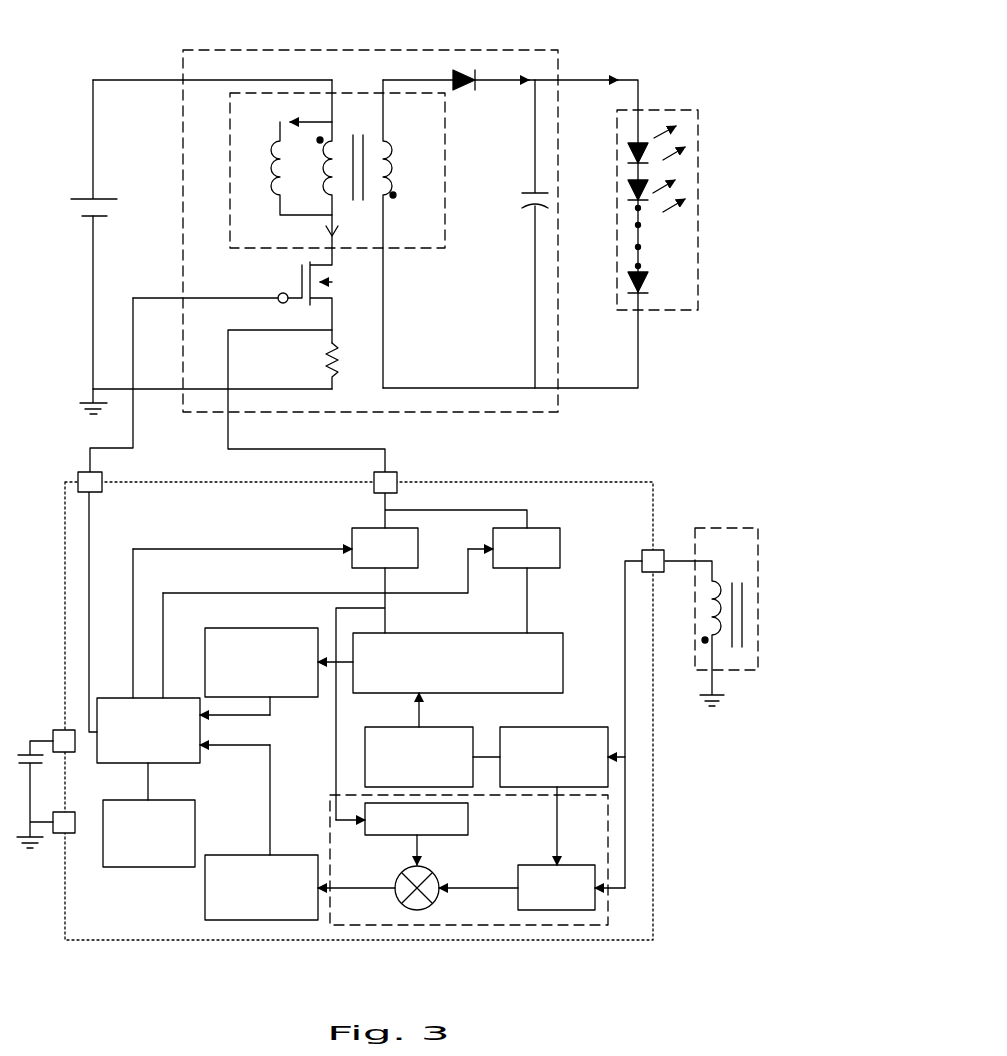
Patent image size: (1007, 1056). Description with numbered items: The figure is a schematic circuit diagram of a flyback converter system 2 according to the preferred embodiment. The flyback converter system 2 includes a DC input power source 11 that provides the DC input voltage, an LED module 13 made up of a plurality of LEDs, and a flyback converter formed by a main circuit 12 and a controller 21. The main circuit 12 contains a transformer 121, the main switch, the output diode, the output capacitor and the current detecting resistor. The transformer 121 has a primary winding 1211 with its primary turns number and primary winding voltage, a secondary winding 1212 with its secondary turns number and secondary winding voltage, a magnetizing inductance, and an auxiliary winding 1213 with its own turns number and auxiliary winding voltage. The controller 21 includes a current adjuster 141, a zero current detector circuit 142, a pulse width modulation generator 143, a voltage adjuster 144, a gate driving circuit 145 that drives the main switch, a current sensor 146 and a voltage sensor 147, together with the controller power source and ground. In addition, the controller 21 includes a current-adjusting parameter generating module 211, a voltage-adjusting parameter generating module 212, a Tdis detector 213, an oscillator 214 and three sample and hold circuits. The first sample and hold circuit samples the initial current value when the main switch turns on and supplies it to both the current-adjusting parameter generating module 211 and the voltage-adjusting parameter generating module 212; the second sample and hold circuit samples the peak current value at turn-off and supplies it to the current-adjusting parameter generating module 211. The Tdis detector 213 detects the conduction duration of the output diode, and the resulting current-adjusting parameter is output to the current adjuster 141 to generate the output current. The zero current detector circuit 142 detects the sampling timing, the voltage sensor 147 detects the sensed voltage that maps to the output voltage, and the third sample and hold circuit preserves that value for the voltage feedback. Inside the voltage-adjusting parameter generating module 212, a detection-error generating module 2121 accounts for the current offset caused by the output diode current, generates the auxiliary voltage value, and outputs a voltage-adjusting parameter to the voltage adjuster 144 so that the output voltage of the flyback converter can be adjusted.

The flyback converter system 2 is at (658, 37).
The DC input power source 11 is at (105, 198).
The main circuit 12 is at (183, 68).
The LED module 13 is at (660, 110).
The transformer 121 is at (317, 234).
The primary winding 1211 is at (320, 176).
The secondary winding 1212 is at (398, 193).
The auxiliary winding 1213 is at (703, 528).
The controller 21 is at (340, 713).
The current adjuster 141 is at (255, 628).
The zero current detector (ZCD) circuit 142 is at (580, 727).
The pulse width modulation (PWM) generator 143 is at (148, 698).
The voltage adjuster 144 is at (225, 855).
The gate driving circuit 145 is at (78, 472).
The current sensor (CS) 146 is at (390, 472).
The voltage sensor (VS) 147 is at (640, 552).
The current-adjusting parameter generating module 211 is at (548, 633).
The voltage-adjusting parameter generating module 212 is at (463, 900).
The Tdis detector 213 is at (365, 742).
The oscillator 214 is at (125, 867).
The detection-error generating module 2121 is at (470, 822).